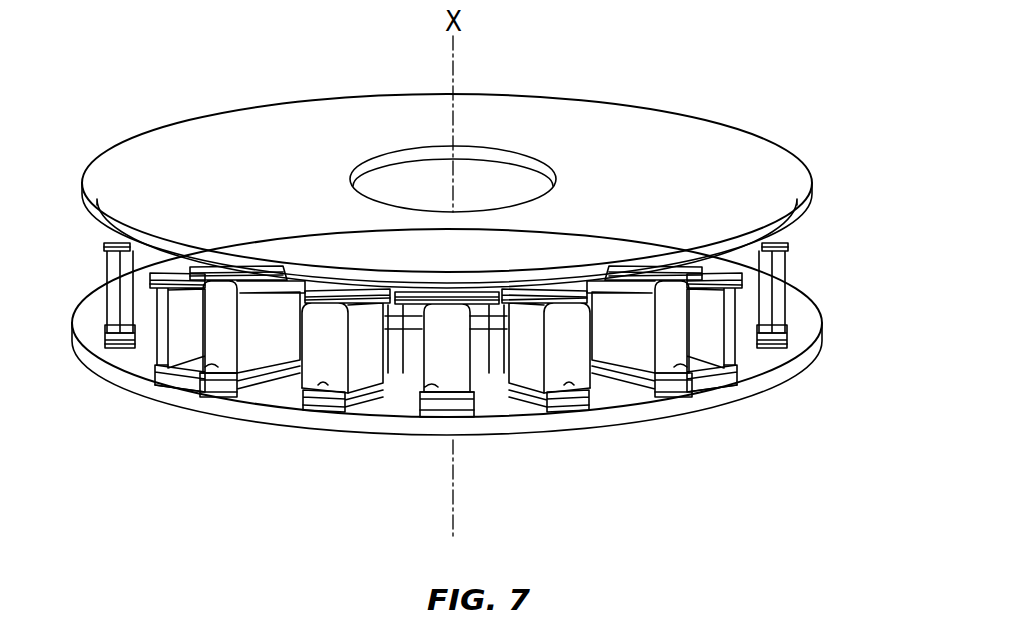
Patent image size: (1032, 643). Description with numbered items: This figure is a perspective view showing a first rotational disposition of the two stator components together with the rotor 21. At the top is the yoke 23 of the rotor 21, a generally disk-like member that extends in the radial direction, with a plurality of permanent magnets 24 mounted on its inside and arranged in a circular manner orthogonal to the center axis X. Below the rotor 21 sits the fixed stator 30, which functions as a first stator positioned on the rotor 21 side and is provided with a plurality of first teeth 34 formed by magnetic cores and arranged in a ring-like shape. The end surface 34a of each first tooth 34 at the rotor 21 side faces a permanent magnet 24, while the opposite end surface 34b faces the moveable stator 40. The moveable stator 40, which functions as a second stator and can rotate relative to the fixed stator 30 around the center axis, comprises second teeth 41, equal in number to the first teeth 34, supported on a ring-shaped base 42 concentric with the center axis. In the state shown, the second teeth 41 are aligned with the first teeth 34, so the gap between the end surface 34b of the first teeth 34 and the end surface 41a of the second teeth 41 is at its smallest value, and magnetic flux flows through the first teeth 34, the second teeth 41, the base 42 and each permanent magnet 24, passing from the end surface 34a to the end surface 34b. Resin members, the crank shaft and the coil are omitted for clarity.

The rotor 21 is at (460, 162).
The yoke 23 is at (623, 117).
The permanent magnets 24 is at (600, 272).
The fixed stator 30 is at (479, 342).
The first teeth 34 is at (470, 335).
The end surface 34a is at (343, 293).
The end surface 34b is at (200, 383).
The moveable stator 40 is at (493, 364).
The second teeth 41 is at (446, 421).
The end surface 41a is at (425, 393).
The base 42 is at (780, 377).